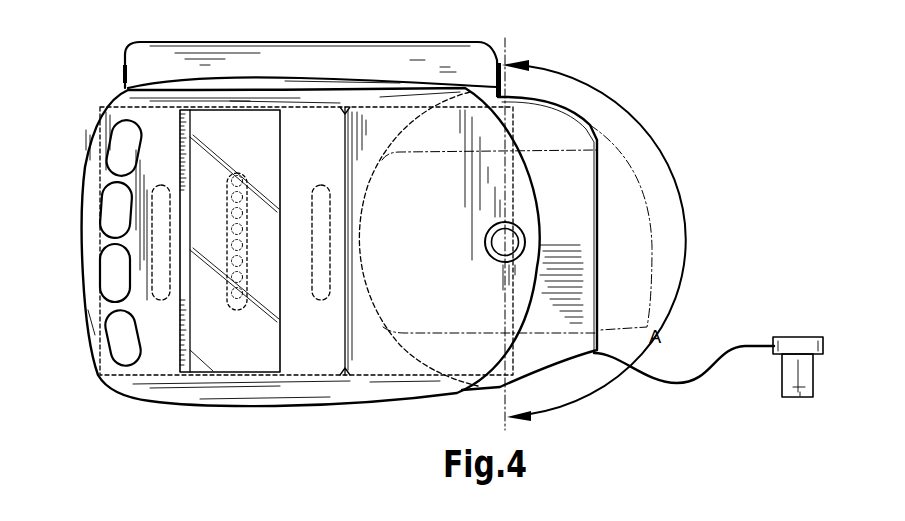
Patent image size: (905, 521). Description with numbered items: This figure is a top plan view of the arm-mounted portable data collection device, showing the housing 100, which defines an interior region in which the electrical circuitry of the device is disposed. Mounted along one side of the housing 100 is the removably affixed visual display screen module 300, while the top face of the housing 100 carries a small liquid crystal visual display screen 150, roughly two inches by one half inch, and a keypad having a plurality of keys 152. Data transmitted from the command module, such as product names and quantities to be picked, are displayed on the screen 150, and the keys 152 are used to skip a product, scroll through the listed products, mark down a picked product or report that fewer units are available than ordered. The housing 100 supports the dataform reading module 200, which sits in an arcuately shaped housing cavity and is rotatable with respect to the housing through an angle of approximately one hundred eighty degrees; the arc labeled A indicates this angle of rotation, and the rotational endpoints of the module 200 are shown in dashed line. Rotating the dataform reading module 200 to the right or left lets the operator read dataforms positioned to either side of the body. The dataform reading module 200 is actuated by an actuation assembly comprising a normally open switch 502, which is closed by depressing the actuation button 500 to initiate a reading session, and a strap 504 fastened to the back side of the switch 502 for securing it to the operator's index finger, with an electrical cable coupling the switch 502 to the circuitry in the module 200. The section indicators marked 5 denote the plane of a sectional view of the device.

The housing 100 is at (302, 430).
The liquid crystal visual display screen 150 is at (261, 147).
The keys 152 is at (127, 335).
The dataform reading module 200 is at (585, 440).
The visual display screen module 300 is at (203, 36).
The actuation button 500 is at (718, 351).
The normally open switch 502 is at (810, 345).
The strap 504 is at (797, 395).
The section line 5- 5 is at (82, 413).